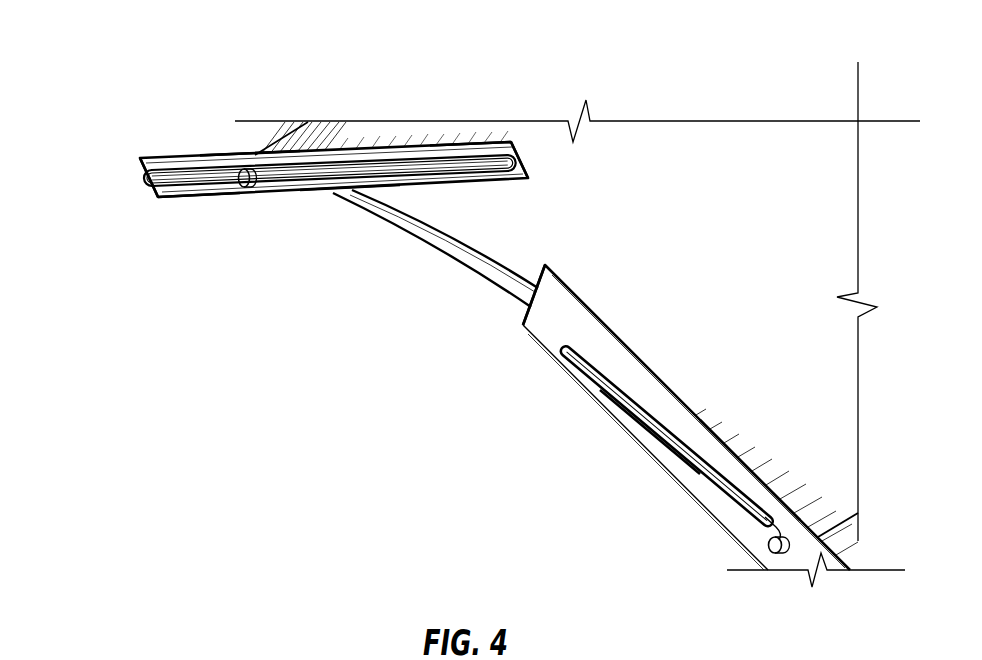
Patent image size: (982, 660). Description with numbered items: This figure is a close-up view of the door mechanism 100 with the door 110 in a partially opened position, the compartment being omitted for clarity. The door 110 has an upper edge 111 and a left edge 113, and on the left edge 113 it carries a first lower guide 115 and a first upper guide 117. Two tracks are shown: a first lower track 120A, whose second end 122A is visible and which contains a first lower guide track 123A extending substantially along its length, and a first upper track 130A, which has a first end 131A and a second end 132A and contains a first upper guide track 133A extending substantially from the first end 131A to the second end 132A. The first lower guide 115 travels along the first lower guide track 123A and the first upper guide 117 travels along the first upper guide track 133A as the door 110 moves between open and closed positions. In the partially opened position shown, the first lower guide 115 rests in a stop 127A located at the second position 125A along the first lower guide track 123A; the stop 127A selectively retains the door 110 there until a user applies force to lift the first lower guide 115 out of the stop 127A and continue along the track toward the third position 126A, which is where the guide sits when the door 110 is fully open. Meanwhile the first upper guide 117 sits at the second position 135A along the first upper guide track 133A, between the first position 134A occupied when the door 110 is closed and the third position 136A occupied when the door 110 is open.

The door mechanism 100 is at (145, 73).
The door 110 is at (740, 238).
The upper edge 111 is at (293, 128).
The left edge 113 is at (462, 255).
The first lower guide 115 is at (767, 543).
The first upper guide 117 is at (245, 188).
The first lower track 120A is at (578, 320).
The second end 122A is at (537, 277).
The first lower guide track 123A is at (660, 433).
The second position 125A is at (797, 520).
The third position 126A is at (642, 422).
The stop 127A is at (788, 558).
The first upper track 130A is at (177, 155).
The first end 131A is at (520, 165).
The second end 132A is at (145, 180).
The first upper guide track 133A is at (330, 175).
The first position 134A is at (497, 142).
The second position 135A is at (248, 158).
The third position 136A is at (160, 198).